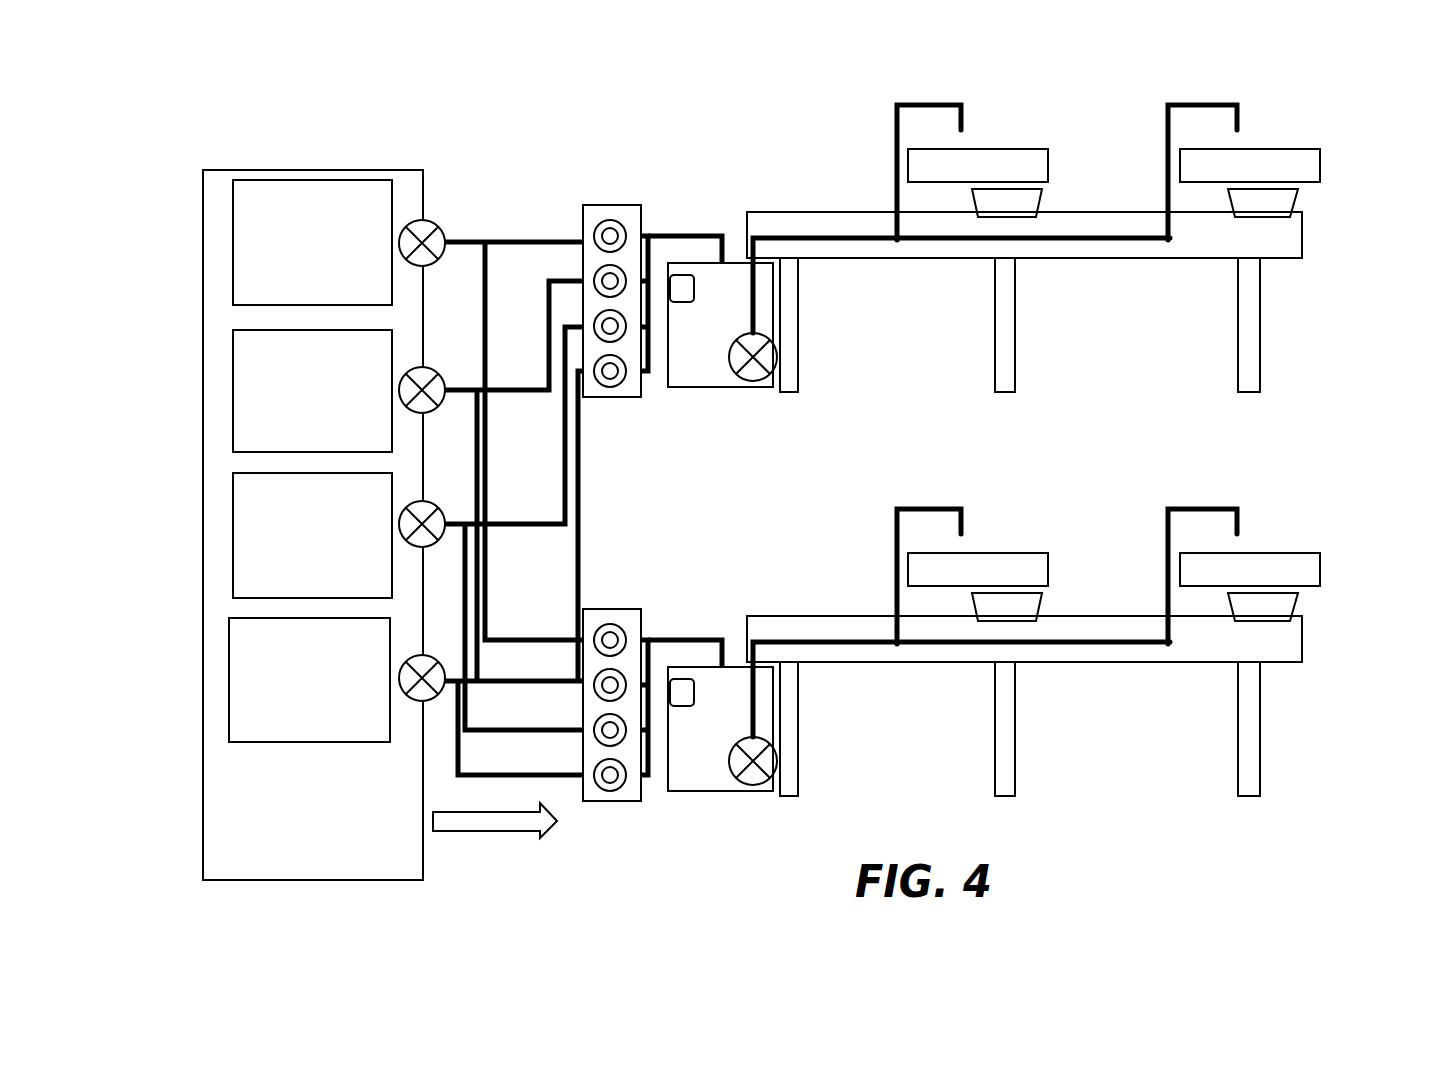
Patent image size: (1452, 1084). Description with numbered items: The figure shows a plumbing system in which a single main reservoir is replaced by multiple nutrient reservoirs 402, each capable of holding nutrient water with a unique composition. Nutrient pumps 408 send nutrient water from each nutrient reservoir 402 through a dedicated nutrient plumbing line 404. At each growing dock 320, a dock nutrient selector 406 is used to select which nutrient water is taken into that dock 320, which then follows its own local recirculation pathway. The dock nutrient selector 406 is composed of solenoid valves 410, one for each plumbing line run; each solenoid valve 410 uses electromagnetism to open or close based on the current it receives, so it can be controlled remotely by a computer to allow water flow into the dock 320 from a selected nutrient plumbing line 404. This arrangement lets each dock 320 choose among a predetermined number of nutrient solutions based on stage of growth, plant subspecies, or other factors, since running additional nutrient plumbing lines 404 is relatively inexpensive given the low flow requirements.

The dock 320 is at (1275, 318).
The nutrient reservoir 402 is at (234, 246).
The nutrient plumbing line 404 is at (477, 373).
The dock nutrient selector 406 is at (615, 800).
The nutrient pump 408 is at (407, 368).
The solenoid valve 410 is at (623, 665).